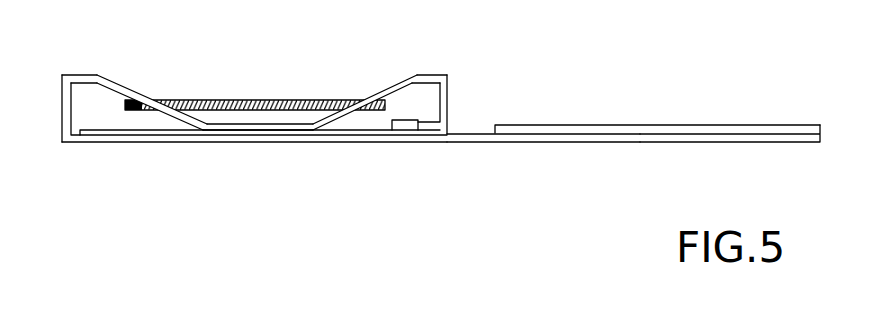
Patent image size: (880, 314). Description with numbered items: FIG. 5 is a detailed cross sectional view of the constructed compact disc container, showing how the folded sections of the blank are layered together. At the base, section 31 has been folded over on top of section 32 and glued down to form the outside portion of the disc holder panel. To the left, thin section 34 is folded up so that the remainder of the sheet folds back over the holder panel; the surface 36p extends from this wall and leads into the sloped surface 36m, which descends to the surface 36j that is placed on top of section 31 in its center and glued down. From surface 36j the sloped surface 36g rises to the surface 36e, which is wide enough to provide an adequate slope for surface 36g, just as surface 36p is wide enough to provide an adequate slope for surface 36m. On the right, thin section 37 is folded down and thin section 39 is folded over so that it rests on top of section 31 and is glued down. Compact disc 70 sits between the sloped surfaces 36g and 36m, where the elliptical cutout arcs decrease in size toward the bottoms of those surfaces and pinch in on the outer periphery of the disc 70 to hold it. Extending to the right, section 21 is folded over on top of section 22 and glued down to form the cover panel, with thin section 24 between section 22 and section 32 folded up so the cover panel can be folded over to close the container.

The section 21 is at (640, 131).
The section 22 is at (613, 137).
The thin section 24 is at (477, 138).
The section 31 is at (280, 132).
The section 32 is at (353, 139).
The thin section 34 is at (62, 105).
The surface 36p is at (103, 45).
The sloped surface 36m is at (120, 86).
The surface 36j is at (237, 126).
The sloped surface 36g is at (385, 88).
The surface 36e is at (478, 43).
The thin section 37 is at (446, 90).
The thin section 39 is at (418, 125).
The compact disc 70 is at (255, 90).